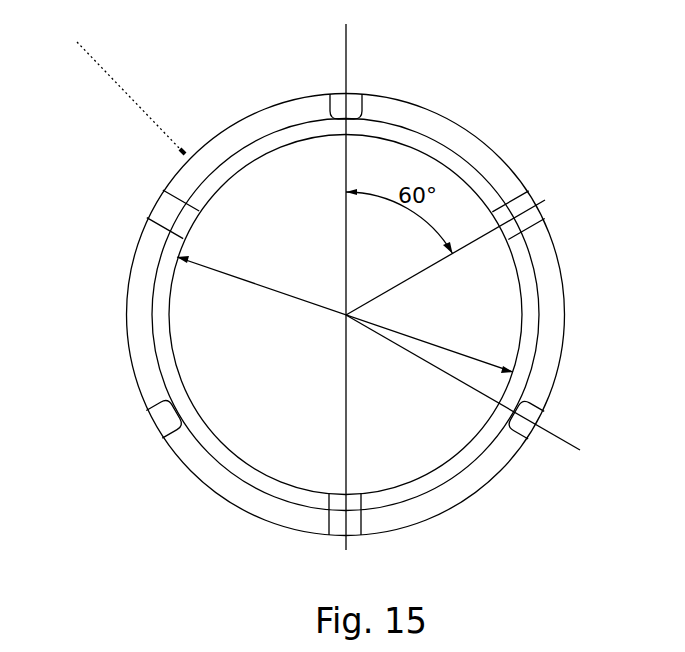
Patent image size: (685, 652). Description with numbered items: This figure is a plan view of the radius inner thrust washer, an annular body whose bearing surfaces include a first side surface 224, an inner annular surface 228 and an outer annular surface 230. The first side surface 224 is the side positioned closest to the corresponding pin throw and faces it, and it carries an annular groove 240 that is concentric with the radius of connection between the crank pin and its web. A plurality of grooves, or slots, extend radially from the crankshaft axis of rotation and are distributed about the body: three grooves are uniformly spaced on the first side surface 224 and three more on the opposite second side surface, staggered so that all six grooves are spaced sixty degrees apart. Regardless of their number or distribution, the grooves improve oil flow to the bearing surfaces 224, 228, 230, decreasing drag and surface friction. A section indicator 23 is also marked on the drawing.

The section line 23 is at (276, 40).
The first side surface 224 is at (346, 318).
The outer annular surface 230 is at (238, 122).
The inner annular surface 228 is at (263, 157).
The annular groove 240 is at (170, 351).